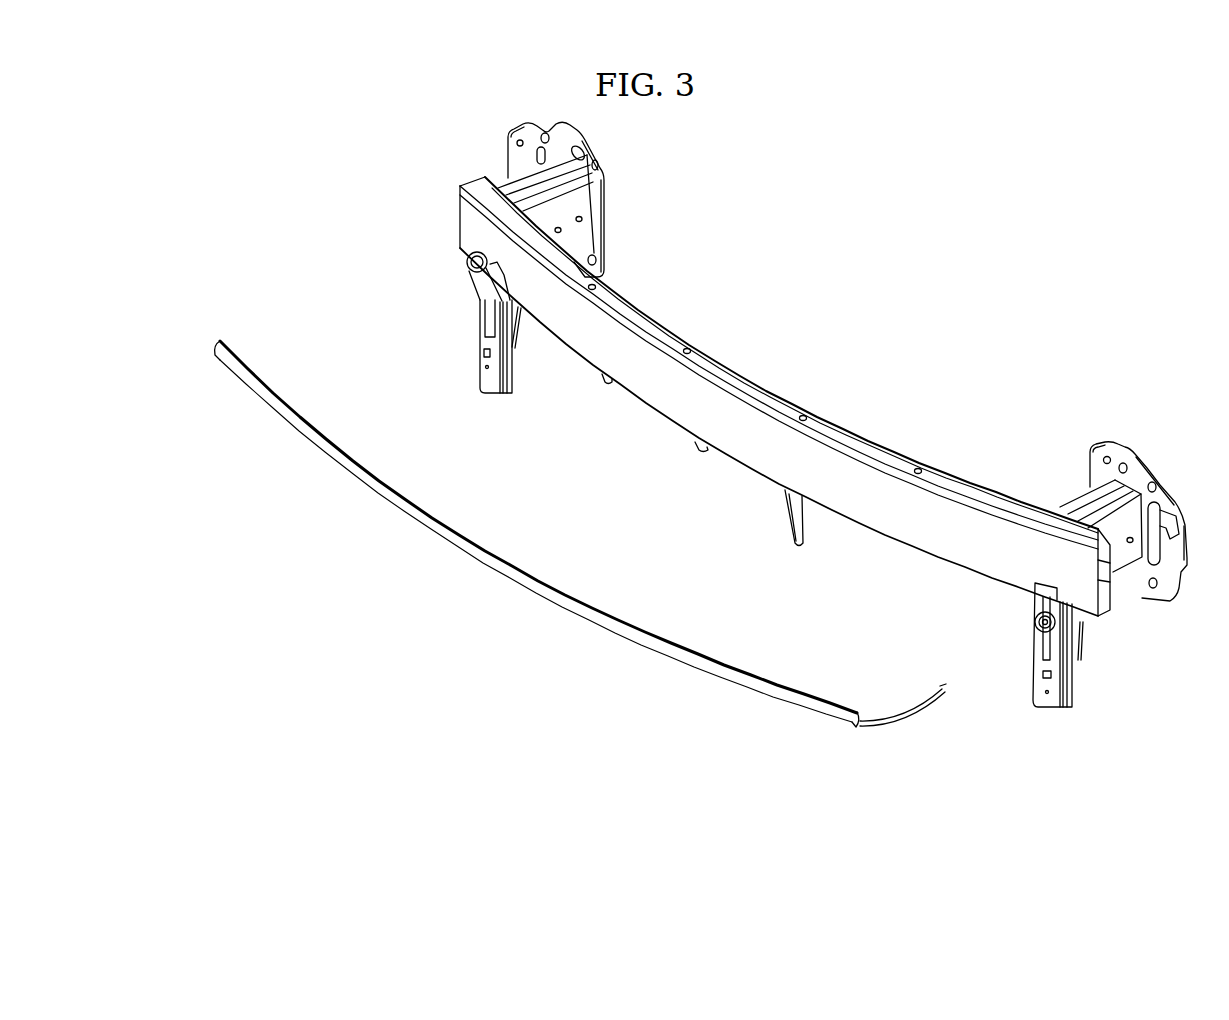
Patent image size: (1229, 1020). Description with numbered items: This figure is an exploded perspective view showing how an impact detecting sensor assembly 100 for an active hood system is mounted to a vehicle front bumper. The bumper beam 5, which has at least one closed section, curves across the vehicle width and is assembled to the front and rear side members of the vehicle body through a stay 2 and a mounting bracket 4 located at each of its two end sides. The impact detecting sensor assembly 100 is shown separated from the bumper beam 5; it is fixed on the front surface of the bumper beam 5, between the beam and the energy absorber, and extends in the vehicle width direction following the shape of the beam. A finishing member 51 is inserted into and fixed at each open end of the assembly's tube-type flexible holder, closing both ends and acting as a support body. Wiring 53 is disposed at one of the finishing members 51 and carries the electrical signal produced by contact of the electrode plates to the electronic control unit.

The bumper beam 5 is at (866, 535).
The stay 2 is at (513, 185).
The mounting bracket 4 is at (546, 128).
The impact detecting sensor assembly 100 is at (420, 531).
The finishing member 51 is at (215, 344).
The wiring 53 is at (896, 719).